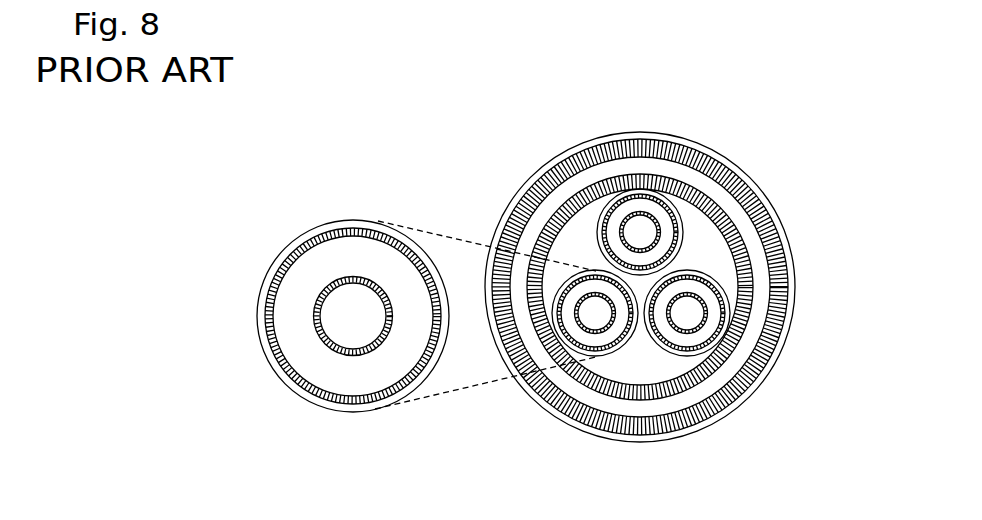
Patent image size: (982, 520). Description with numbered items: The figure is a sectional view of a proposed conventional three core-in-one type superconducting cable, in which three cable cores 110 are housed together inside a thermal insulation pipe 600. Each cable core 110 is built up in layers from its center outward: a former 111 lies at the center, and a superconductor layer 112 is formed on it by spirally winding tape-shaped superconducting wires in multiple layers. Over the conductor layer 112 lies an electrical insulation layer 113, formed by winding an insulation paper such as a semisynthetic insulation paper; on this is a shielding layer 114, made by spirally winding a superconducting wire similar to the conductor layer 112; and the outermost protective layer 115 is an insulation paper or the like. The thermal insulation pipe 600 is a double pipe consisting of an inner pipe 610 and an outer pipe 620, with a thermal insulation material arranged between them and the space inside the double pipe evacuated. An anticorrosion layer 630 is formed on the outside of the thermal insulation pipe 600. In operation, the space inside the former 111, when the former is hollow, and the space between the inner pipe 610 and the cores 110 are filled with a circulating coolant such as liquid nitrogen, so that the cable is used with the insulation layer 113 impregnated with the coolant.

The cable core 110 is at (394, 282).
The former 111 is at (325, 308).
The superconductor layer 112 is at (315, 328).
The electrical insulation layer 113 is at (308, 358).
The shielding layer 114 is at (327, 403).
The protective layer 115 is at (377, 403).
The thermal insulation pipe 600 is at (689, 266).
The inner pipe 610 is at (690, 188).
The outer pipe 620 is at (745, 187).
The anticorrosion layer 630 is at (788, 338).